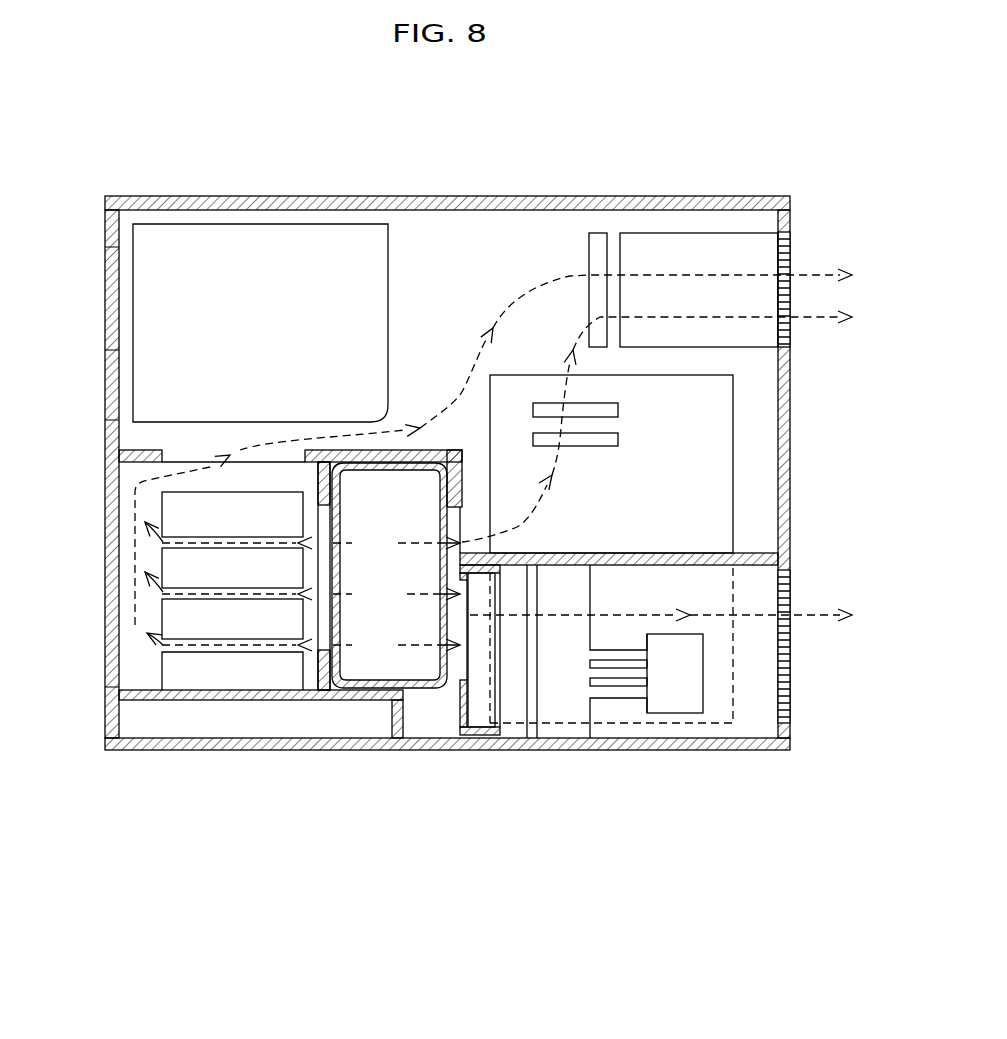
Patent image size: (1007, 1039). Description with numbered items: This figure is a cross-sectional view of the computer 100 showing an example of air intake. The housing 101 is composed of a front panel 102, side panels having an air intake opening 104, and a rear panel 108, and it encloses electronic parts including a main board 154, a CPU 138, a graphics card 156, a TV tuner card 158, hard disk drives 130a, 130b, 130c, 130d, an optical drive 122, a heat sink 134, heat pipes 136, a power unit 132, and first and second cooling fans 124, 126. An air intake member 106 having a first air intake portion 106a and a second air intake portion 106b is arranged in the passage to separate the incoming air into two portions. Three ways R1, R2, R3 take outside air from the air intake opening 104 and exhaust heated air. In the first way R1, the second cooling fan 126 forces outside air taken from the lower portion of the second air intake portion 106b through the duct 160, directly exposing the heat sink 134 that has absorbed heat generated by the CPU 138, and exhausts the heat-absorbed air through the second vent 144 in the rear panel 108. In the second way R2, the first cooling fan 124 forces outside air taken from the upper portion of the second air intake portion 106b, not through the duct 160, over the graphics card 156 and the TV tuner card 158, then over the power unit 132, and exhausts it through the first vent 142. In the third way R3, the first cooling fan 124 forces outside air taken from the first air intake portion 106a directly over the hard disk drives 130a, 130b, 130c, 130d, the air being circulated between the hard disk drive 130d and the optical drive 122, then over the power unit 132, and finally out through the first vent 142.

The computer 100 is at (512, 112).
The housing 101 is at (479, 147).
The front panel 102 is at (105, 307).
The air intake opening 104 is at (410, 688).
The air intake member 106 is at (427, 690).
The first air intake portion 106a is at (365, 518).
The second air intake portion 106b is at (437, 590).
The rear panel 108 is at (876, 357).
The optical drive 122 is at (235, 252).
The first cooling fan 124 is at (596, 240).
The second cooling fan 126 is at (513, 717).
The hard disk drive 130a is at (197, 676).
The hard disk drive 130b is at (177, 612).
The hard disk drive 130c is at (177, 560).
The hard disk drive 130d is at (177, 510).
The power unit 132 is at (730, 240).
The heat sink 134 is at (565, 712).
The heat pipes 136 is at (620, 693).
The CPU 138 is at (678, 707).
The first vent 142 is at (790, 240).
The second vent 144 is at (790, 598).
The main board 154 is at (748, 493).
The graphics card 156 is at (618, 410).
The TV tuner card 158 is at (618, 440).
The duct 160 is at (468, 713).
The first way R1 is at (632, 614).
The second way R2 is at (557, 457).
The third way R3 is at (515, 307).